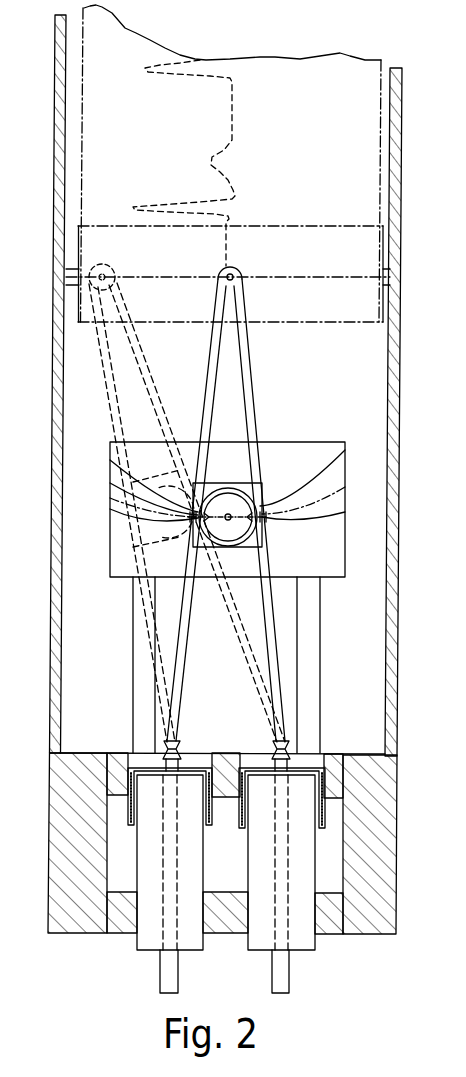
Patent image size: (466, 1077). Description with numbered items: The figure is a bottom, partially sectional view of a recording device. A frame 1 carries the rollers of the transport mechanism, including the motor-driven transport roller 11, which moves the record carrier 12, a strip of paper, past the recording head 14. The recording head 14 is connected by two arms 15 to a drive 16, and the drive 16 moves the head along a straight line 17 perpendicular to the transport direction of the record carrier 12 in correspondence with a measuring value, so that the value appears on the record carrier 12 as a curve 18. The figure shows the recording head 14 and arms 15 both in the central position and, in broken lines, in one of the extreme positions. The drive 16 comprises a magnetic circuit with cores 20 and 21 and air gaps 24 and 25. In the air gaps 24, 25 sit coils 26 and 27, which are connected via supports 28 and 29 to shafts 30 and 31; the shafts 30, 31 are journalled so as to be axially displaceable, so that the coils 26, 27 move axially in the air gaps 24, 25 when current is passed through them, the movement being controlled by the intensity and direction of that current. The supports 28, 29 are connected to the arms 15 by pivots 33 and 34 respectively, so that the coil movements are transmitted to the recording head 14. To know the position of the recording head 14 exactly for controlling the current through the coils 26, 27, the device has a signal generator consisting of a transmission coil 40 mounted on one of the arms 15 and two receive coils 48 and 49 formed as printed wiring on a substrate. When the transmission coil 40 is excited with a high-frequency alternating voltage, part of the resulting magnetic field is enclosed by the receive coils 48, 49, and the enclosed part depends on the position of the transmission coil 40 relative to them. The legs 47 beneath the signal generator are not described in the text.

The frame 1 is at (60, 47).
The record carrier 12 is at (80, 152).
The curve 18 is at (220, 147).
The transport roller 11 is at (77, 240).
The straight line 17 is at (303, 277).
The recording head 14 is at (227, 282).
The arms 15 is at (208, 393).
The receive coil 49 is at (110, 465).
The receive coil 48 is at (110, 527).
The transmission coil 40 is at (240, 545).
The support leg 47 is at (135, 622).
The drive 16 is at (358, 941).
The air gap 24 is at (125, 760).
The support 28 is at (145, 762).
The support 29 is at (253, 760).
The pivot 33 is at (180, 740).
The pivot 34 is at (284, 748).
The coil 26 is at (128, 818).
The air gap 25 is at (326, 790).
The coil 27 is at (322, 831).
The core 20 is at (143, 942).
The core 21 is at (257, 941).
The shaft 30 is at (165, 980).
The shaft 31 is at (272, 980).